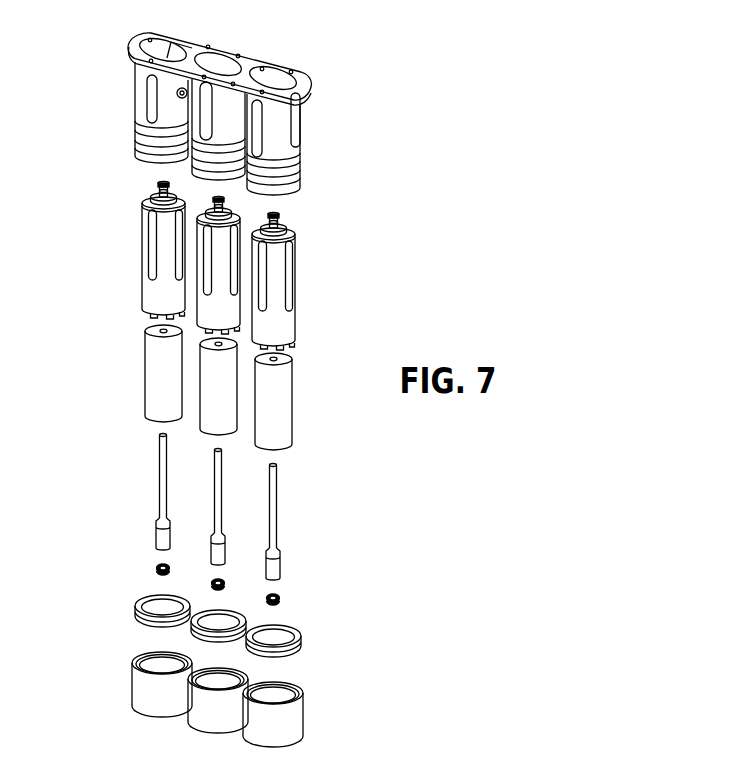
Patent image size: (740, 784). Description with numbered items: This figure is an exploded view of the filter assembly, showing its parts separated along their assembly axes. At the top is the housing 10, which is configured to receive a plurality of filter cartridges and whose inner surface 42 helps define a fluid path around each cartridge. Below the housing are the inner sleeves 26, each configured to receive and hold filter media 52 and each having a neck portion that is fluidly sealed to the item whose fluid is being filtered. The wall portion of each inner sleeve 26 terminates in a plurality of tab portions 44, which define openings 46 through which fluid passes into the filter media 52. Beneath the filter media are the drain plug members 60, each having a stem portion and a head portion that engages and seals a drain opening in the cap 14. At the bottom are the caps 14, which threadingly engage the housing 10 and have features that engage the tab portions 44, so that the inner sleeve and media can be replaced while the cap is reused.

The housing 10 is at (227, 97).
The cap 14 is at (150, 690).
The inner sleeve 26 is at (218, 269).
The inner surface of the housing 42 is at (150, 46).
The tab portions 44 is at (151, 318).
The openings 46 is at (144, 309).
The filter media 52 is at (147, 373).
The drain plug member 60 is at (155, 478).